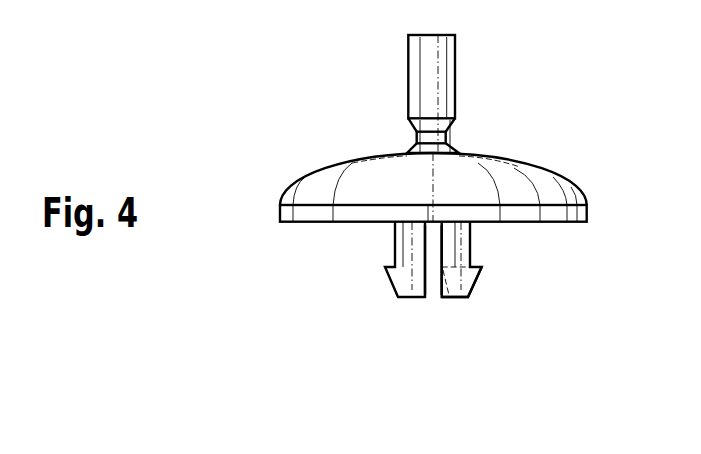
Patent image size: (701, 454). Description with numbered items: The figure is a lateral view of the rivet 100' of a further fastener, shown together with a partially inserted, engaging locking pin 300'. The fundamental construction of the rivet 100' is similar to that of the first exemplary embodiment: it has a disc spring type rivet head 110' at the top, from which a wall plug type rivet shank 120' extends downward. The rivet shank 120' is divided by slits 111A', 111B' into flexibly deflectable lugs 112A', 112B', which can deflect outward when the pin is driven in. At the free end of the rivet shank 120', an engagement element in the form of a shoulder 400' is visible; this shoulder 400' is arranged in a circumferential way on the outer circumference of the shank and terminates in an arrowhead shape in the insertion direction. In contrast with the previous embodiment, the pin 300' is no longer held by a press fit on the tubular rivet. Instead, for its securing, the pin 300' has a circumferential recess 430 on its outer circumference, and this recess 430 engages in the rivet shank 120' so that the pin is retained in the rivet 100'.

The rivet 100' is at (435, 237).
The rivet head 110' is at (465, 183).
The flexibly deflectable lug 112A' is at (362, 294).
The flexibly deflectable lug 112B' is at (513, 294).
The slit 111A' is at (405, 295).
The slit 111B' is at (477, 295).
The rivet shank 120' is at (428, 294).
The shoulder 400' is at (505, 281).
The locking pin 300' is at (391, 94).
The circumferential recess 430 is at (468, 131).